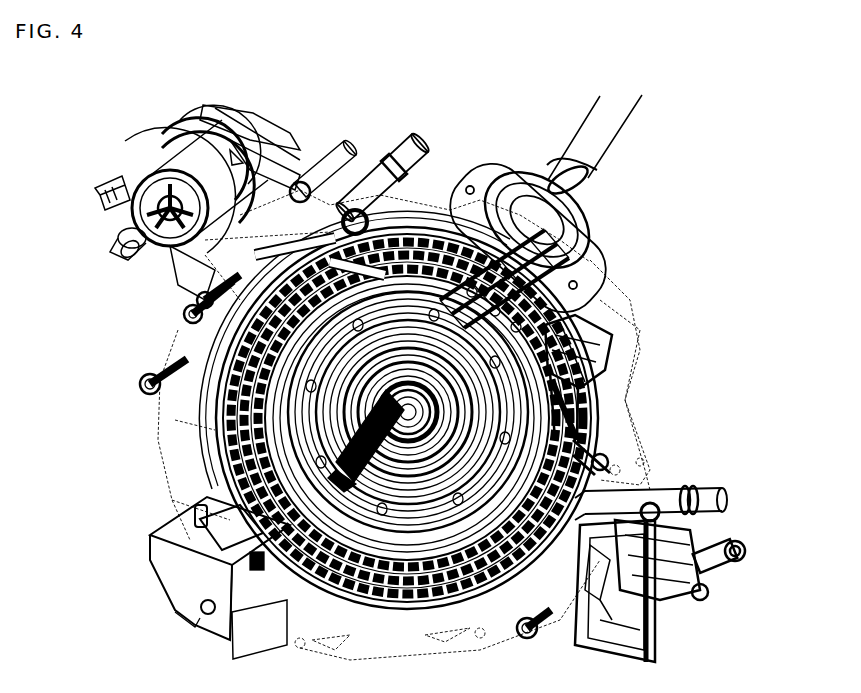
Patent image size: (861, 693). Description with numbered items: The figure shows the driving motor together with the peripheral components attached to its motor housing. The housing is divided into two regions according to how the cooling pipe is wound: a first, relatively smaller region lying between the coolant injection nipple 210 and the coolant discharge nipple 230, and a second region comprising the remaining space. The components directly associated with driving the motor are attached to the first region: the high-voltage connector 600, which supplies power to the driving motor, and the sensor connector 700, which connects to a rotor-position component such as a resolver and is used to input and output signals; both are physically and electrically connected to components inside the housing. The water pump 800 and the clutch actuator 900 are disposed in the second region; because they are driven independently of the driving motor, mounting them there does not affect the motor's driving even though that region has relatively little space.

The coolant injection nipple 210 is at (702, 491).
The coolant discharge nipple 230 is at (400, 150).
The high-voltage connector 600 is at (599, 148).
The sensor connector 700 is at (600, 330).
The water pump 800 is at (118, 236).
The clutch actuator 900 is at (684, 610).